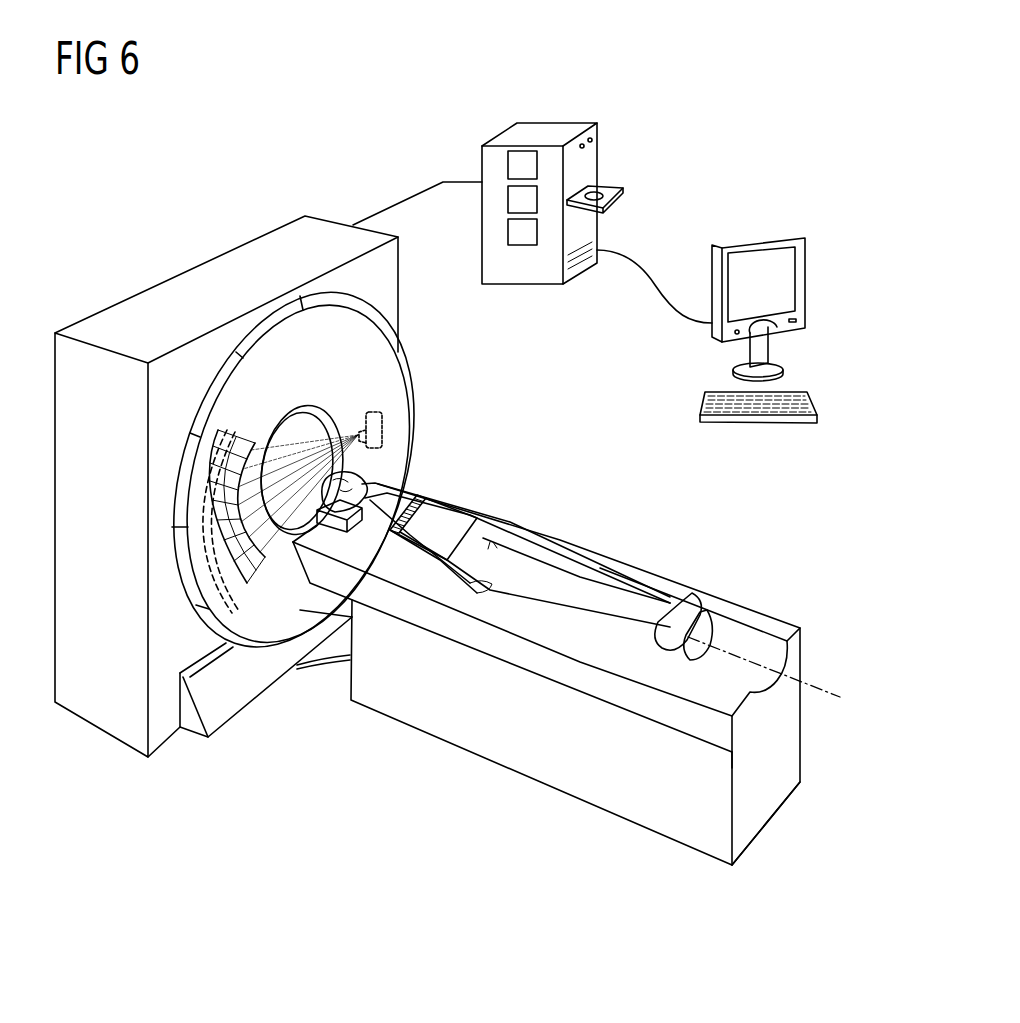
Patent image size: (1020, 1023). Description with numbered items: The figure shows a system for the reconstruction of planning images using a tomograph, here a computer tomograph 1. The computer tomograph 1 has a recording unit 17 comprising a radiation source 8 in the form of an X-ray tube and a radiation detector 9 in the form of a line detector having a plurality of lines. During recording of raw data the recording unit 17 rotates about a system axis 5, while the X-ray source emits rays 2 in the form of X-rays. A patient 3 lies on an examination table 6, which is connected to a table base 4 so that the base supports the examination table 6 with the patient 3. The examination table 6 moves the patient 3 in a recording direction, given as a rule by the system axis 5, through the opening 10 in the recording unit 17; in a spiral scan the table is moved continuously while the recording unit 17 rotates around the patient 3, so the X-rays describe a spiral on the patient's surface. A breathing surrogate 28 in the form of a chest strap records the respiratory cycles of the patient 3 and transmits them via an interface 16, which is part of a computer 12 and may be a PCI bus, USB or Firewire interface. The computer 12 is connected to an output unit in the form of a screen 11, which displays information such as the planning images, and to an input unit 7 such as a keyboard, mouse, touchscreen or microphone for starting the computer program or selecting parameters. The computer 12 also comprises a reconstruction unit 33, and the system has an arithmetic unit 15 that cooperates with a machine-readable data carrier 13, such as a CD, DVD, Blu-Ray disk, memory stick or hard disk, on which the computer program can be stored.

The computer tomograph 1 is at (140, 268).
The rays 2 is at (322, 430).
The patient 3 is at (553, 553).
The table base 4 is at (510, 745).
The system axis 5 is at (831, 688).
The examination table 6 is at (755, 620).
The input unit 7 is at (697, 417).
The radiation source 8 is at (385, 418).
The radiation detector 9 is at (238, 588).
The opening 10 is at (293, 430).
The screen 11 is at (755, 238).
The computer 12 is at (537, 132).
The machine-readable data carrier 13 is at (602, 188).
The arithmetic unit 15 is at (508, 197).
The interface 16 is at (508, 165).
The recording unit 17 is at (412, 369).
The breathing surrogate 28 is at (423, 506).
The reconstruction unit 33 is at (508, 233).